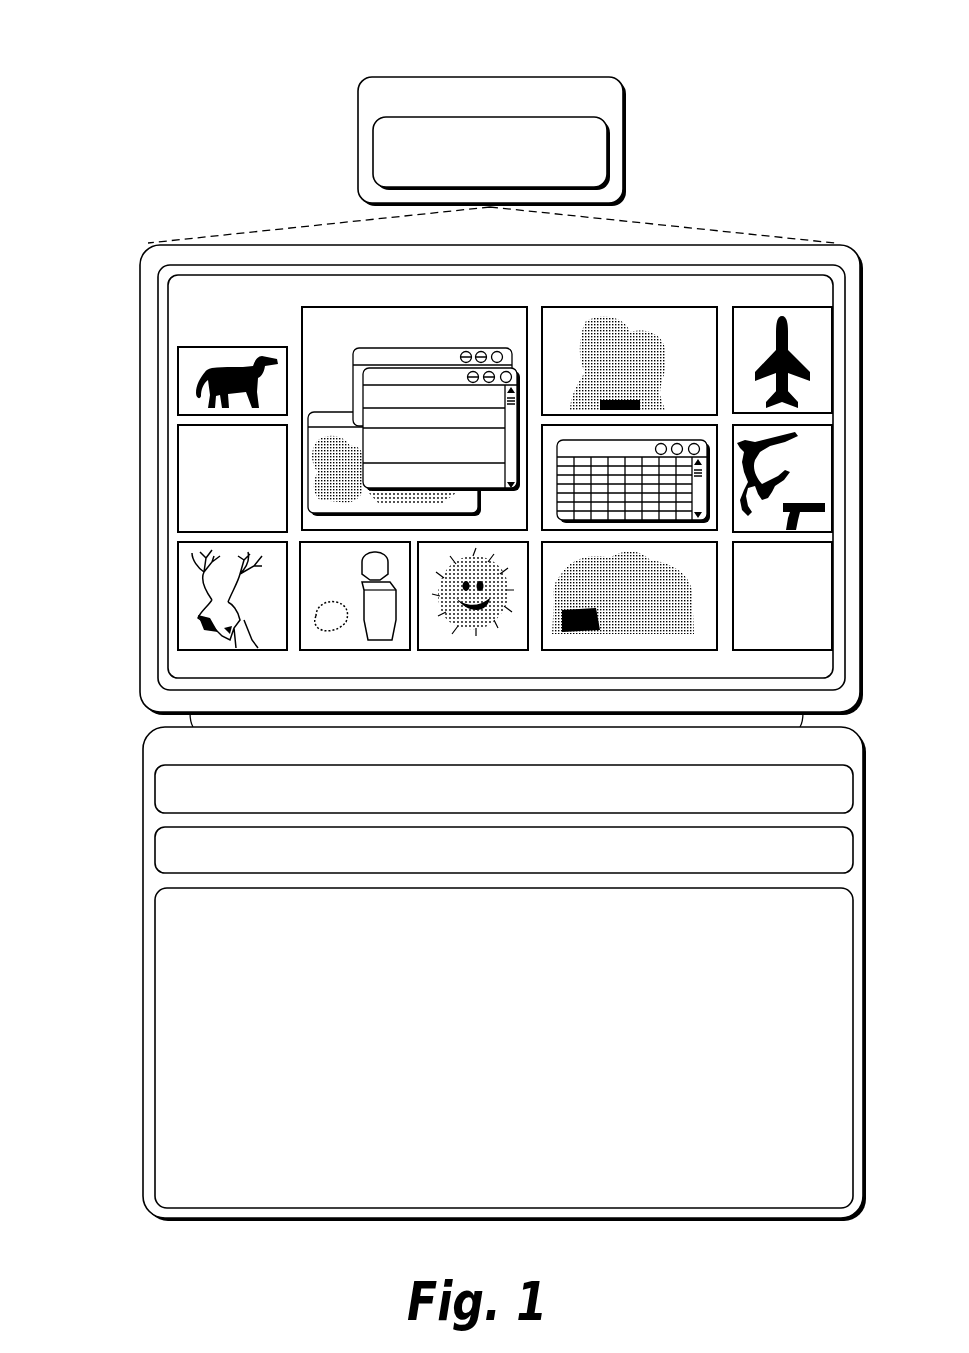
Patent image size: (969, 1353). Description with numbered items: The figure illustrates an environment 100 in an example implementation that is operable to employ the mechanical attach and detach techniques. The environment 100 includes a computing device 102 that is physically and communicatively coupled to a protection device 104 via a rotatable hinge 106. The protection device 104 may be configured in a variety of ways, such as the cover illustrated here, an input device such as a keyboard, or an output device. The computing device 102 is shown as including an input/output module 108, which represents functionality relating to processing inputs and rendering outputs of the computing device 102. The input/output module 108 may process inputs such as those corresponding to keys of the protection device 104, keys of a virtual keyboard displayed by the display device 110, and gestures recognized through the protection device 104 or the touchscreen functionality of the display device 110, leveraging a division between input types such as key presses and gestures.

The environment 100 is at (137, 62).
The computing device 102 is at (492, 141).
The protection device 104 is at (143, 960).
The rotatable hinge 106 is at (138, 722).
The input/output module 108 is at (491, 153).
The display device 110 is at (168, 478).